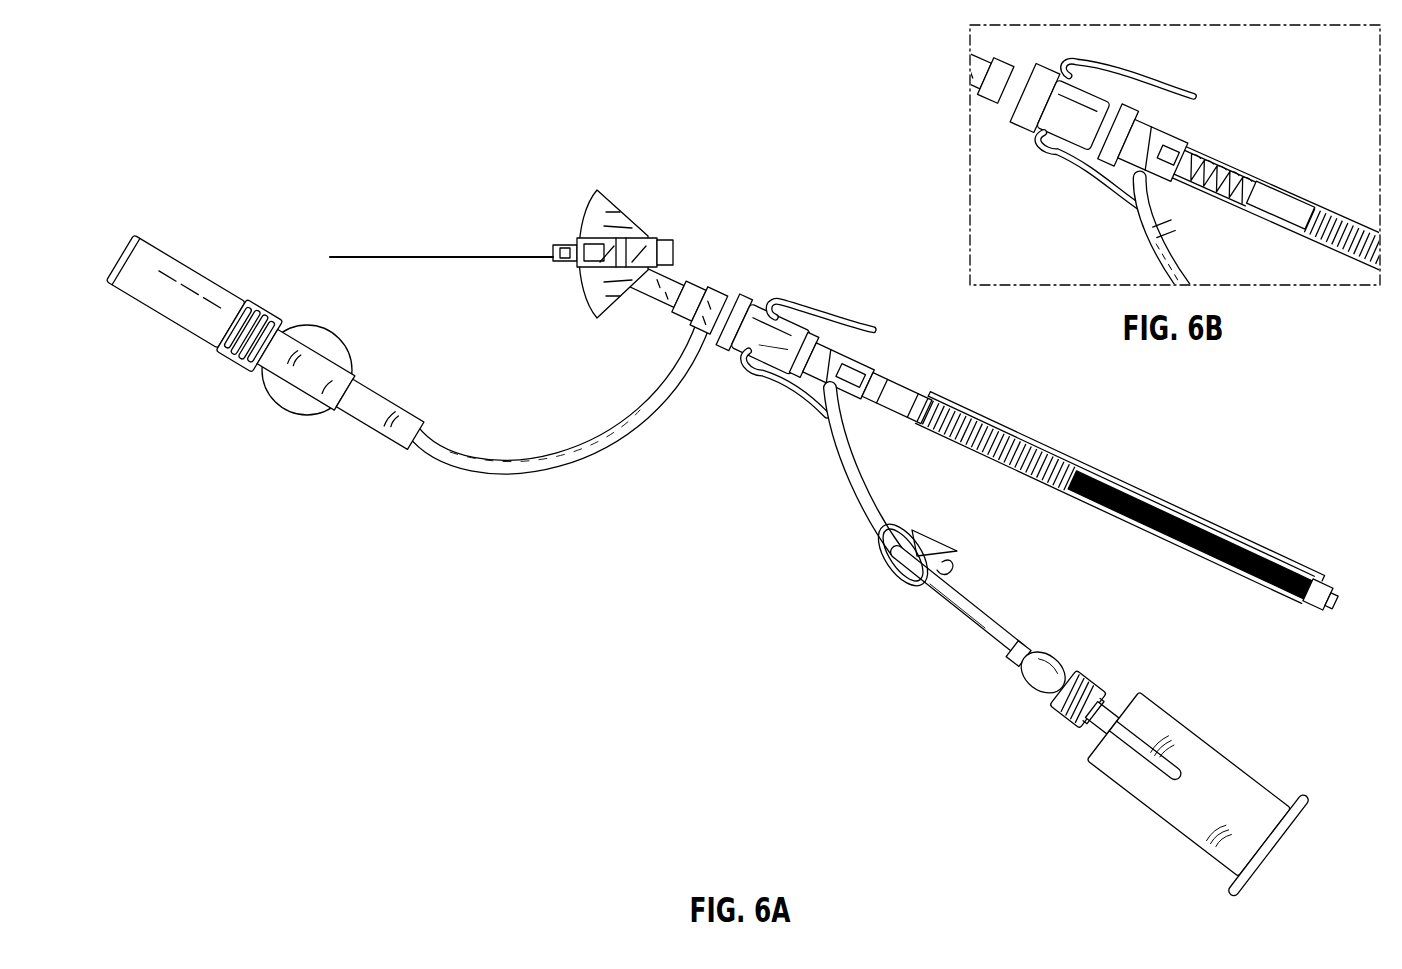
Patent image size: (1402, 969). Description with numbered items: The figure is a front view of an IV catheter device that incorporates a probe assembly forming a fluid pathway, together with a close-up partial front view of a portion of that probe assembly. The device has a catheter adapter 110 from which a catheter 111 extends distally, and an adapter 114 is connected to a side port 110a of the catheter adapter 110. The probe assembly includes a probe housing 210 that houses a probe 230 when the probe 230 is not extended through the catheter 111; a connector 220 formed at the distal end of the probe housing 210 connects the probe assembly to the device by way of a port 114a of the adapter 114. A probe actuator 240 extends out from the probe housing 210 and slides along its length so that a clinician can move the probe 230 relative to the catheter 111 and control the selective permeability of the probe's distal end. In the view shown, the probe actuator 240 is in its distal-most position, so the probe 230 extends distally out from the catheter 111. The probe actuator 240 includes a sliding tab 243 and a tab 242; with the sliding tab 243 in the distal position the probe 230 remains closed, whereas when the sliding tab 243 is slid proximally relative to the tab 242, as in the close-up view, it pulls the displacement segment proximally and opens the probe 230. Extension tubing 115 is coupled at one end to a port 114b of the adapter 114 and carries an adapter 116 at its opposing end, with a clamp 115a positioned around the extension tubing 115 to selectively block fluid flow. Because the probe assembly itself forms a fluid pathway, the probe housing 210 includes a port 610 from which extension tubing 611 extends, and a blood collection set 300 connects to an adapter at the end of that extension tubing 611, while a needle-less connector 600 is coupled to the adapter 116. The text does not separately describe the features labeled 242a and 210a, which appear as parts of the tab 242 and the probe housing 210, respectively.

In FIG. 6A, the catheter adapter 110 is at (650, 168).
In FIG. 6A, the side port 110a is at (590, 300).
In FIG. 6A, the catheter 111 is at (498, 250).
In FIG. 6A, the probe 230 is at (358, 256).
In FIG. 6A, the adapter 114 is at (697, 288).
In FIG. 6A, the port 114a is at (763, 318).
In FIG. 6A, the port 114b is at (700, 348).
In FIG. 6A, the extension tubing 115 is at (503, 458).
In FIG. 6A, the clamp 115a is at (900, 578).
In FIG. 6A, the adapter 116 is at (297, 392).
In FIG. 6A, the needle-less connector 600 is at (157, 313).
In FIG. 6A, the port 610 is at (817, 408).
In FIG. 6A, the extension tubing 611 is at (985, 620).
In FIG. 6A, the connector 220 is at (850, 328).
In FIG. 6A, the probe actuator 240 is at (920, 406).
In FIG. 6A, the tab 242 is at (900, 382).
In FIG. 6B, the tab 242 is at (1233, 163).
In FIG. 6B, the housing tube 242a is at (1237, 205).
In FIG. 6A, the sliding tab 243 is at (846, 434).
In FIG. 6B, the sliding tab 243 is at (1300, 207).
In FIG. 6A, the probe housing 210 is at (1197, 557).
In FIG. 6A, the instrument distal portion 210a is at (1252, 548).
In FIG. 6A, the blood collection set 300 is at (1250, 718).